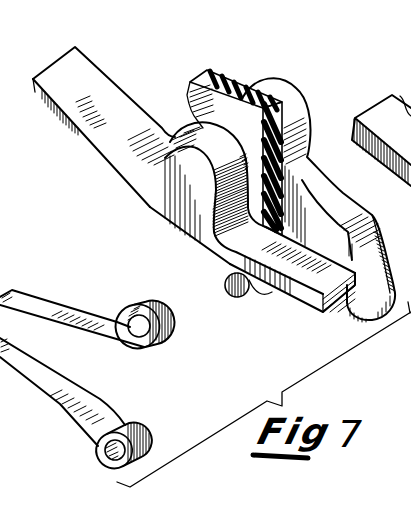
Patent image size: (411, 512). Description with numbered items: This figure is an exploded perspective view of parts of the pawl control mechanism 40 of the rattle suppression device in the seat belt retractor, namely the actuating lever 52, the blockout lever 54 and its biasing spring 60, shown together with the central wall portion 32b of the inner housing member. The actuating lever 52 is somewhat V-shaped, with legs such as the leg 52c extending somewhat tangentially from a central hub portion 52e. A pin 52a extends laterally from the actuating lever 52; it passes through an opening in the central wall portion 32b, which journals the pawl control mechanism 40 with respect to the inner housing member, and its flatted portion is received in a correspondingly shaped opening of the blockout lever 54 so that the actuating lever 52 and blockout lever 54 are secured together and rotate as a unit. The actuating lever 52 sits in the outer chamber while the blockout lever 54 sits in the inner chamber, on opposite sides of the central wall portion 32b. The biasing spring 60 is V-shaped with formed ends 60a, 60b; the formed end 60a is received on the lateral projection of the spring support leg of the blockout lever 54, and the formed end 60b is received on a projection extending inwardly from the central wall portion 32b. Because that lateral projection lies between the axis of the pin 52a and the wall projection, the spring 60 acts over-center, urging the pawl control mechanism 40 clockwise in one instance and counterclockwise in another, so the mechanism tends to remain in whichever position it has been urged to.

The pawl control mechanism 40 is at (152, 90).
The actuating lever 52 is at (137, 184).
The pin 52a is at (300, 292).
The leg 52c is at (62, 58).
The central hub portion 52e is at (170, 194).
The central wall portion 32b is at (217, 73).
The blockout lever 54 is at (310, 122).
The biasing spring 60 is at (72, 407).
The formed end 60a is at (172, 325).
The formed end 60b is at (152, 432).